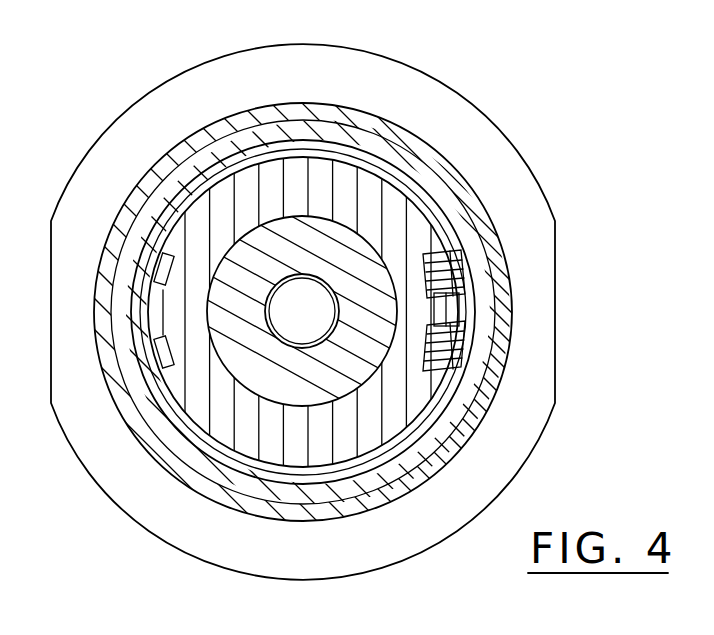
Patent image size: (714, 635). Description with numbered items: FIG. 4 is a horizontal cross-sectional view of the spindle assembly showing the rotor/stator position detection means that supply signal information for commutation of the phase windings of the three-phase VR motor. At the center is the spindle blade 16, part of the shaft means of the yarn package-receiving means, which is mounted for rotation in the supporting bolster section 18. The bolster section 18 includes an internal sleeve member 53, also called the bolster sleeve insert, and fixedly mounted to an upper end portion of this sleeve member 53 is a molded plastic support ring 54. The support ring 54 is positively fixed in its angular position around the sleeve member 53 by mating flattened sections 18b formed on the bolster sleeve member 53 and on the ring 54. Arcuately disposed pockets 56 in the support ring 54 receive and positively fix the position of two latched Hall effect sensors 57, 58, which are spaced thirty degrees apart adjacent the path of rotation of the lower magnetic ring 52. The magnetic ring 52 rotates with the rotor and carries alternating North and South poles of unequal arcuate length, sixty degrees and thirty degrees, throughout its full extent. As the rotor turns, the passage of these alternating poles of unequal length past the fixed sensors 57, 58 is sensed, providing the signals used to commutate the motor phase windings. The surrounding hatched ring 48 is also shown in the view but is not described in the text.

The spindle blade 16 is at (297, 295).
The bolster section 18 is at (167, 117).
The flattened sections 18b is at (430, 392).
The outer casing ring 48 is at (455, 178).
The magnetic ring 52 is at (413, 158).
The internal sleeve member 53 is at (295, 372).
The support ring 54 is at (220, 405).
The pockets 56 is at (440, 298).
The Hall effect sensor 57 is at (447, 272).
The Hall effect sensor 58 is at (443, 350).